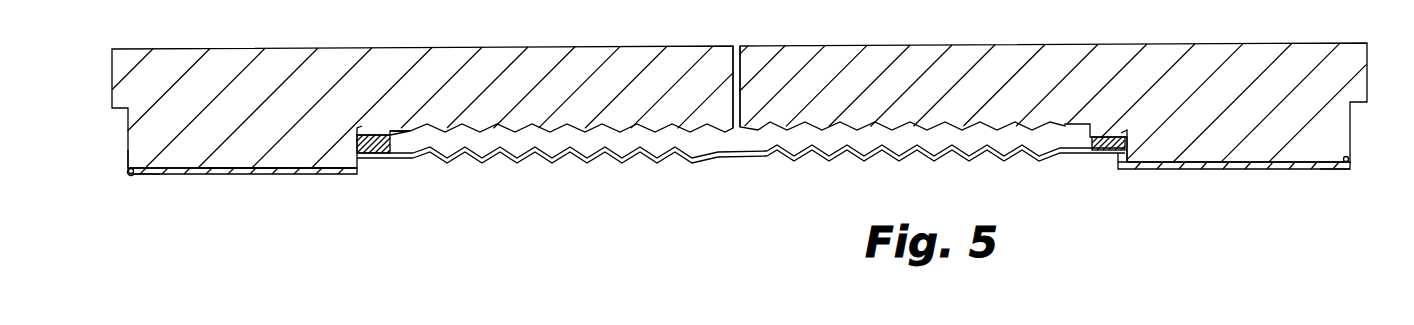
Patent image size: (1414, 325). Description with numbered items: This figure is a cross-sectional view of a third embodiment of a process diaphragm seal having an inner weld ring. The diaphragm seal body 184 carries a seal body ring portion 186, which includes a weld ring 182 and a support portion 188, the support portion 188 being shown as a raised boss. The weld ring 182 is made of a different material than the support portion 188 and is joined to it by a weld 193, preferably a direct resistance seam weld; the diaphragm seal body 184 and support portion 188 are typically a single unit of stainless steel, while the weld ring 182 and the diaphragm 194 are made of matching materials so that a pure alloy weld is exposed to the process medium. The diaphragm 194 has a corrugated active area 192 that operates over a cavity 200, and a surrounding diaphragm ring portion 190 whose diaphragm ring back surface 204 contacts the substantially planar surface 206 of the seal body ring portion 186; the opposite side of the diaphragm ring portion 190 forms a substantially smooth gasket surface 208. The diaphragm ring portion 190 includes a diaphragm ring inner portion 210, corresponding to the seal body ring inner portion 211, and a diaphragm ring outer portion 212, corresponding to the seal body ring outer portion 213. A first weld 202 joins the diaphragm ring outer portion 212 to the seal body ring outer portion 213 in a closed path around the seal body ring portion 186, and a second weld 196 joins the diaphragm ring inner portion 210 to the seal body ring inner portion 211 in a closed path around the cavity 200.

The weld ring 182 is at (368, 155).
The diaphragm seal body 184 is at (613, 68).
The seal body ring portion 186 is at (232, 104).
The support portion 188 is at (325, 164).
The diaphragm ring portion 190 is at (180, 174).
The active area 192 is at (858, 157).
The weld 193 is at (360, 134).
The diaphragm 194 is at (697, 164).
The second weld 196 is at (1109, 151).
The cavity 200 is at (767, 133).
The first weld 202 is at (132, 172).
The diaphragm ring back surface 204 is at (232, 161).
The substantially planar surface 206 is at (1214, 158).
The substantially smooth gasket surface 208 is at (1360, 163).
The diaphragm ring inner portion 210 is at (378, 158).
The seal body ring inner portion 211 is at (396, 150).
The diaphragm ring outer portion 212 is at (135, 174).
The seal body ring outer portion 213 is at (128, 153).